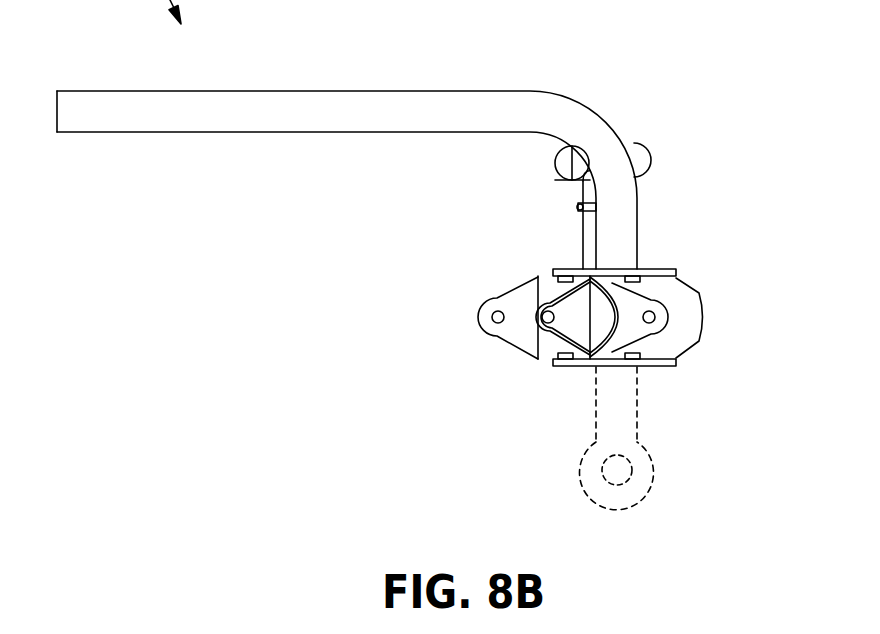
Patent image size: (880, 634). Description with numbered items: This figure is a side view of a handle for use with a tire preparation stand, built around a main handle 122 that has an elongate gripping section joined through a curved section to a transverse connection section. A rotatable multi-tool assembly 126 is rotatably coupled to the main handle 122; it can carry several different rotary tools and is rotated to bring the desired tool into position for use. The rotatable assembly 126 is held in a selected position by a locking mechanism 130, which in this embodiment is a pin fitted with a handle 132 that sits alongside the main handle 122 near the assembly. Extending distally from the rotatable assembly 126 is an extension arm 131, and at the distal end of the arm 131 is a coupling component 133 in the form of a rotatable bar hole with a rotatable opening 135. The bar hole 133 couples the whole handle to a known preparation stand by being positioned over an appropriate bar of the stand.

The main handle 122 is at (296, 103).
The rotatable multi-tool assembly 126 is at (454, 308).
The locking mechanism 130 is at (588, 259).
The extension arm 131 is at (597, 430).
The handle 132 is at (558, 159).
The coupling component 133 is at (654, 474).
The rotatable opening 135 is at (587, 472).